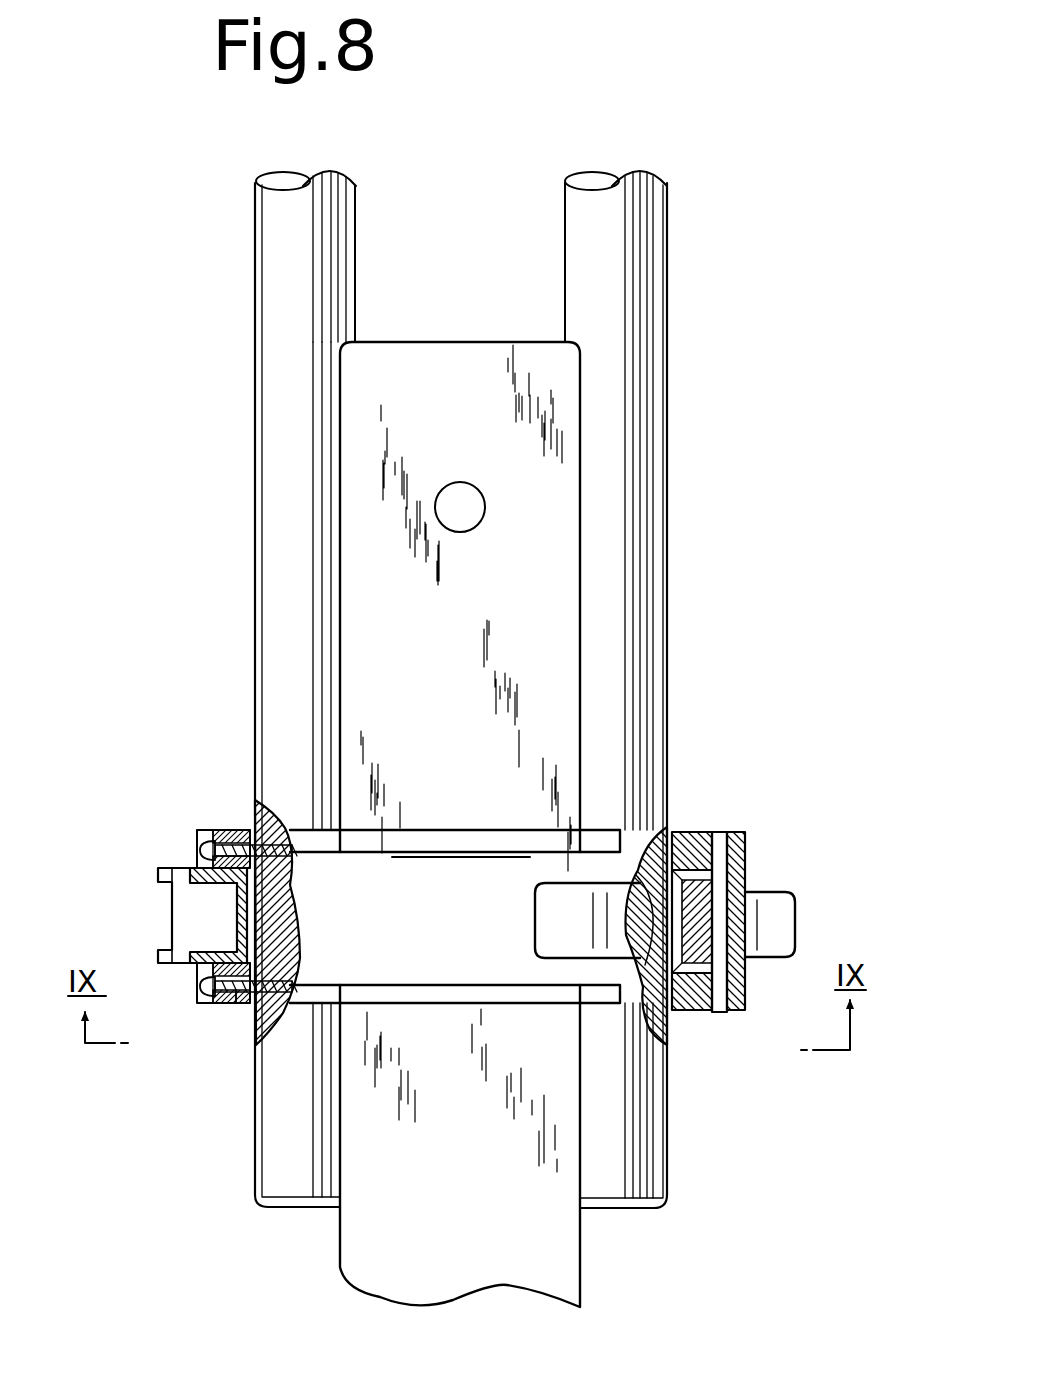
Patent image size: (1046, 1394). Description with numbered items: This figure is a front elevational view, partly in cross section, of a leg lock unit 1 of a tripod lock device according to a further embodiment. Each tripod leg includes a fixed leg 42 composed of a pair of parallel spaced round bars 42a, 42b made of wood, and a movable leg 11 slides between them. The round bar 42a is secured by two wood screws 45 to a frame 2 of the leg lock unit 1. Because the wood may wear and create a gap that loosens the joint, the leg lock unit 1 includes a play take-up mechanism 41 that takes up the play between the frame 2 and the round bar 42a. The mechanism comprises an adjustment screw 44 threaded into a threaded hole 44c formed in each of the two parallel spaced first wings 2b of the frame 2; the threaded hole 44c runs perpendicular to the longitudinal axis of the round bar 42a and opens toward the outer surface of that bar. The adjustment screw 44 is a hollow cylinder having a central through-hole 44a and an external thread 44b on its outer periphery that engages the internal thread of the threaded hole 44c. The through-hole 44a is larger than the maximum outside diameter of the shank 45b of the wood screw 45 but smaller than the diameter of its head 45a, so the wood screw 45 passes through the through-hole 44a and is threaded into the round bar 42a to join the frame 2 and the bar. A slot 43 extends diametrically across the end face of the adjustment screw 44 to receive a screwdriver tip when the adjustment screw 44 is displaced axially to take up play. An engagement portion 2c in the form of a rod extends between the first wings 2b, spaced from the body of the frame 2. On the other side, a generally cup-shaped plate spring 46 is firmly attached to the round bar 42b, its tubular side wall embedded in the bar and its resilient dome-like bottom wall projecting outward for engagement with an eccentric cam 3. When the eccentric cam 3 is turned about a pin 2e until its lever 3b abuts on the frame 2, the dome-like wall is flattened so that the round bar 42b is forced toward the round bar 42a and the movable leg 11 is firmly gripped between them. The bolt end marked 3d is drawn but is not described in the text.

The leg lock unit 1 is at (508, 1015).
The frame 2 is at (386, 976).
The first wings 2b is at (200, 1004).
The engagement portion 2c is at (178, 918).
The pin 2e is at (717, 835).
The eccentric cam 3 is at (707, 900).
The lever 3b is at (551, 898).
The bolt end 3d is at (780, 932).
The movable leg 11 is at (432, 358).
The play take-up mechanism 41 is at (196, 822).
The fixed leg 42 is at (525, 175).
The round bar 42a is at (320, 214).
The round bar 42b is at (592, 237).
The slot 43 is at (200, 826).
The adjustment screw 44 is at (233, 1010).
The central through-hole 44a is at (242, 1015).
The external thread 44b is at (232, 832).
The threaded hole 44c is at (208, 832).
The wood screw 45 is at (153, 1045).
The head 45a is at (203, 1008).
The shank 45b is at (223, 1010).
The plate spring 46 is at (684, 830).